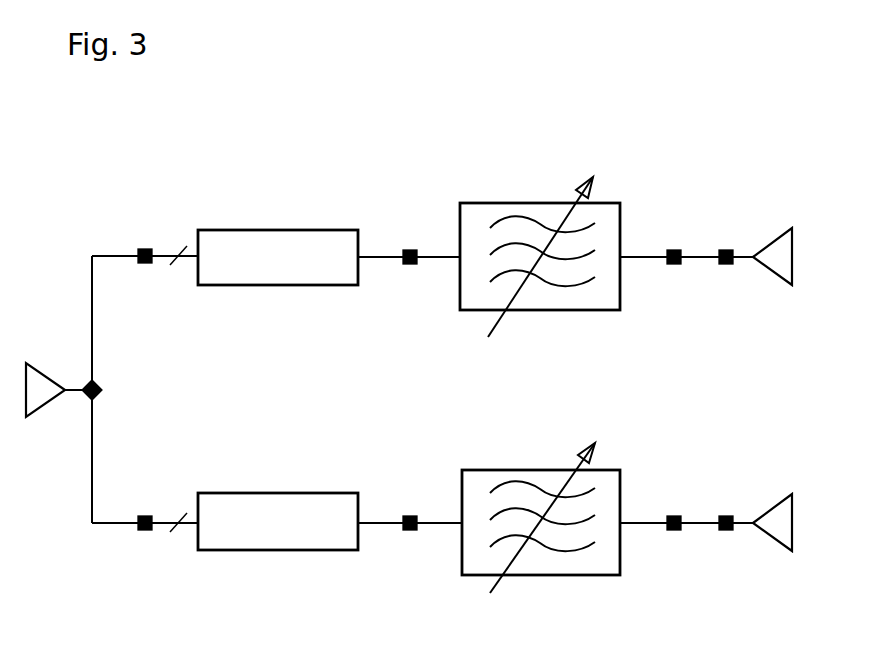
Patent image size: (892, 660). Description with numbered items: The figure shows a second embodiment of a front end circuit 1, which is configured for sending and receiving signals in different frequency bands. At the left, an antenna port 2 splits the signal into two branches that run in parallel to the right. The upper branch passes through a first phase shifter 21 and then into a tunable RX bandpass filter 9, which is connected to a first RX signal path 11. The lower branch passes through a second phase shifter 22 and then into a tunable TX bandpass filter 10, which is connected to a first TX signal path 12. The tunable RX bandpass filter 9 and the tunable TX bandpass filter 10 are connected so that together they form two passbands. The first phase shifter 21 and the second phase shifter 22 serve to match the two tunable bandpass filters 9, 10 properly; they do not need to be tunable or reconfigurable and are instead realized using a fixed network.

The front end circuit 1 is at (208, 180).
The antenna port 2 is at (101, 390).
The first phase shifter 21 is at (241, 243).
The second phase shifter 22 is at (230, 507).
The tunable RX bandpass filter 9 is at (482, 212).
The tunable TX bandpass filter 10 is at (473, 478).
The first RX signal path 11 is at (676, 250).
The first TX signal path 12 is at (675, 516).